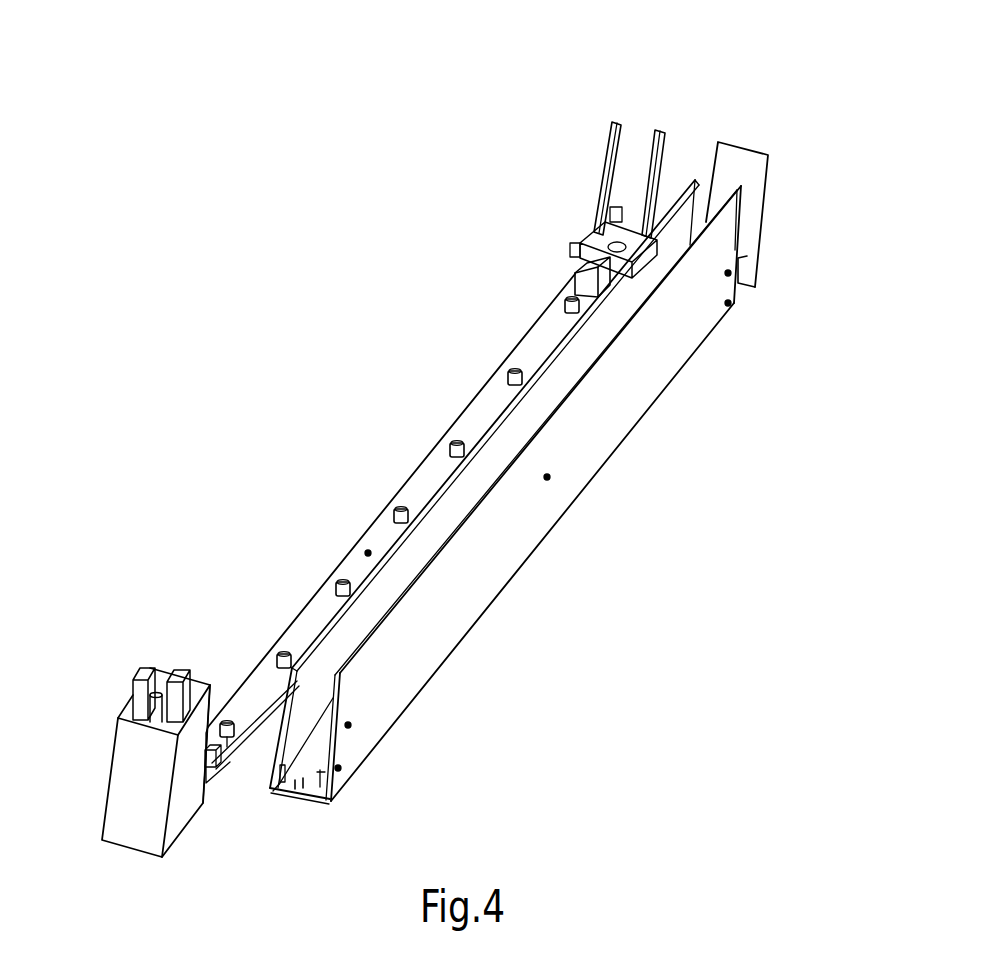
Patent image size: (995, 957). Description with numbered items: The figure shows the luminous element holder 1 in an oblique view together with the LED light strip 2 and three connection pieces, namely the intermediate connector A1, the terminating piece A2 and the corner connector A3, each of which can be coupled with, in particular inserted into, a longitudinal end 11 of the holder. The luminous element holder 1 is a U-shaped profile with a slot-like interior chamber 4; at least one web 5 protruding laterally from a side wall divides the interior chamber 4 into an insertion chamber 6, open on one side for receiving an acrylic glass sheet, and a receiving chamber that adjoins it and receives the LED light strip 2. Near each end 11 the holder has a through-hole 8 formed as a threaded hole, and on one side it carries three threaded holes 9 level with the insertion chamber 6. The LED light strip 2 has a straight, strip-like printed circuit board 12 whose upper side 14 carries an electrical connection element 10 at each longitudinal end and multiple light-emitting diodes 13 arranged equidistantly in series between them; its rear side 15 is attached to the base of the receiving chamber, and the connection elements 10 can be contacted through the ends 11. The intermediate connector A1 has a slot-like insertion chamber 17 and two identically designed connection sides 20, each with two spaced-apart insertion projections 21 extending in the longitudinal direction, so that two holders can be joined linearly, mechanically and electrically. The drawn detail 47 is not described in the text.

The luminous element holder 1 is at (484, 612).
The LED light strip 2 is at (414, 472).
The interior chamber 4 is at (308, 708).
The web 5 is at (275, 793).
The insertion chamber 6 is at (308, 688).
The through-hole 8 is at (340, 770).
The threaded holes 9 is at (549, 479).
The electrical connection element 10 is at (574, 276).
The longitudinal end 11 is at (740, 304).
The printed circuit board 12 is at (367, 550).
The light-emitting diodes 13 is at (511, 369).
The upper side 14 is at (308, 634).
The rear side 15 is at (97, 770).
The insertion chamber 17 is at (634, 140).
The connection side 20 is at (633, 195).
The insertion projections 21 is at (582, 248).
The contact pins 47 is at (303, 782).
The intermediate connector A1 is at (642, 96).
The terminating piece A2 is at (784, 188).
The corner connector A3 is at (193, 790).